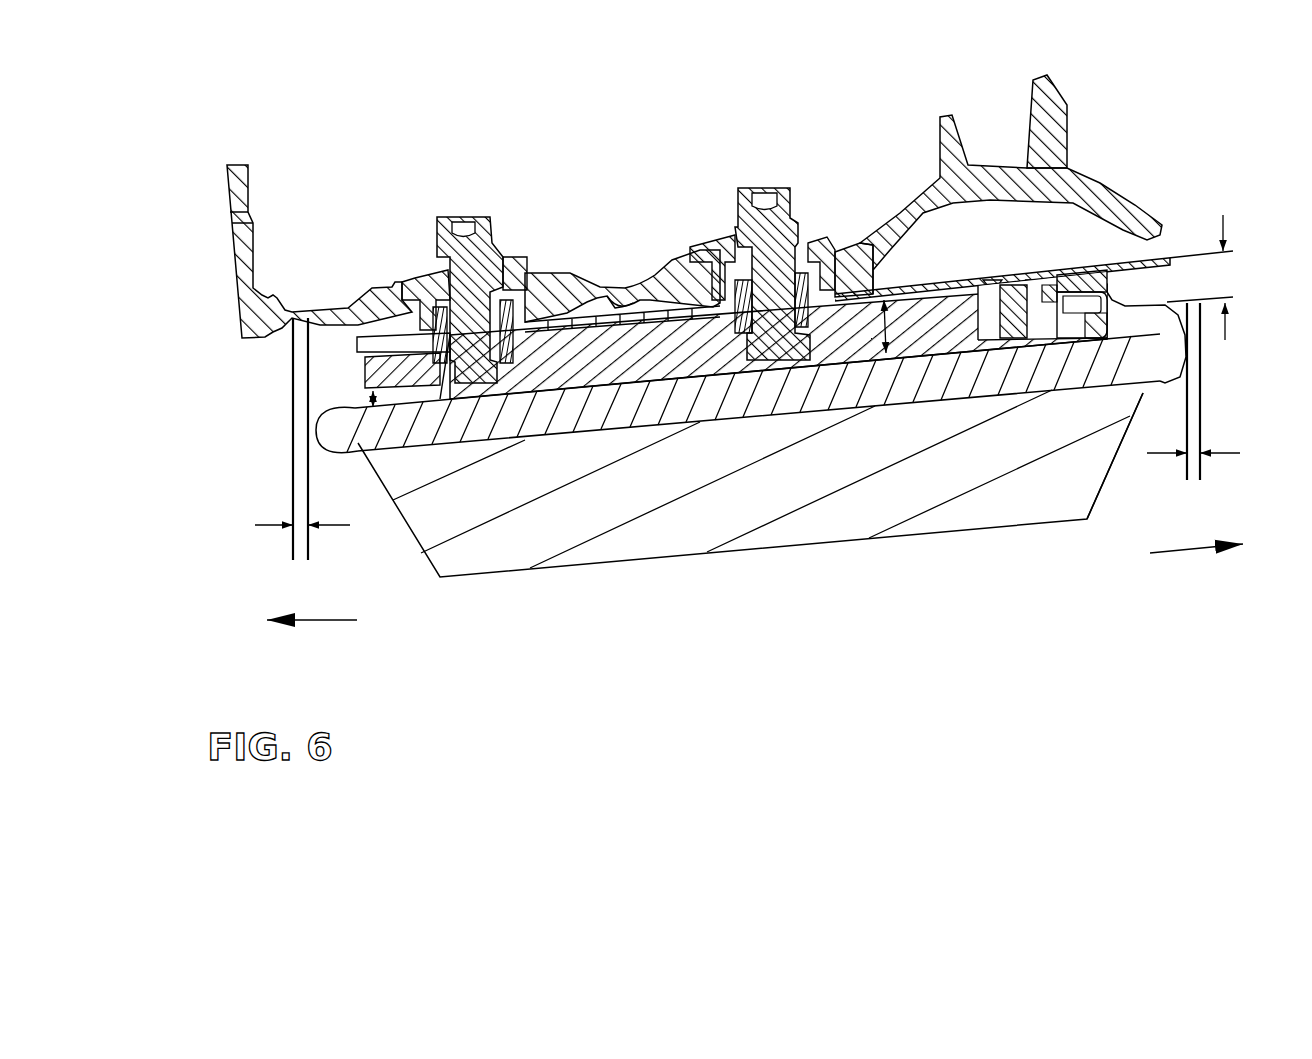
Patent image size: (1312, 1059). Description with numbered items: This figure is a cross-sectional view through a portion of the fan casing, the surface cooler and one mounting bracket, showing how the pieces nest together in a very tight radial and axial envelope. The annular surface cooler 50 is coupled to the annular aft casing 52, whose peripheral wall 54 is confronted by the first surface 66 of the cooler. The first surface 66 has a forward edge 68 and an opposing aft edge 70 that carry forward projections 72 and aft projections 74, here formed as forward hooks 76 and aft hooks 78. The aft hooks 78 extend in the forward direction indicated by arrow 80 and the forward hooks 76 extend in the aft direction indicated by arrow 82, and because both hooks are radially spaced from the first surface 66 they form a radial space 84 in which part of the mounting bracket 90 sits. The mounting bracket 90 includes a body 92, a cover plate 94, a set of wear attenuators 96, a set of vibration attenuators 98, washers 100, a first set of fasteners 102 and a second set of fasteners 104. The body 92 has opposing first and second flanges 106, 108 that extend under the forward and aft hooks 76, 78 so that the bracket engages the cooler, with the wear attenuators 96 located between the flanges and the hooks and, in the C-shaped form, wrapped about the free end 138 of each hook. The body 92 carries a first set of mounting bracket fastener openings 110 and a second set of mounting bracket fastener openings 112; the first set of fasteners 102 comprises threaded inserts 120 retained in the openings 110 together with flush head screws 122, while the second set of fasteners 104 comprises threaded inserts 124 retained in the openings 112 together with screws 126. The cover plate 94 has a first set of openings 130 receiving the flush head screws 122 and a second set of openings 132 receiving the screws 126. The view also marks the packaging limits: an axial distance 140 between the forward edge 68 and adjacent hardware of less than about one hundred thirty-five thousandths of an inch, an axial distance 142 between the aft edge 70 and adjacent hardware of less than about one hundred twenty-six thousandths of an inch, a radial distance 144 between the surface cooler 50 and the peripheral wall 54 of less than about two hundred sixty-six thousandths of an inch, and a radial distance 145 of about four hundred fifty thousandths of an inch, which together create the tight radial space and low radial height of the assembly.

The surface cooler 50 is at (569, 567).
The aft casing 52 is at (604, 278).
The peripheral wall 54 is at (622, 307).
The first surface 66 is at (607, 392).
The forward edge 68 is at (321, 455).
The aft edge 70 is at (1182, 378).
The forward projections 72 is at (364, 363).
The aft projections 74 is at (1100, 294).
The forward hooks 76 is at (403, 368).
The aft hooks 78 is at (1062, 310).
The arrow 80 is at (338, 620).
The arrow 82 is at (1180, 553).
The radial space 84 is at (375, 390).
The mounting bracket 90 is at (920, 277).
The body 92 is at (927, 392).
The cover plate 94 is at (884, 296).
The wear attenuators 96 is at (440, 392).
The vibration attenuators 98 is at (415, 358).
The washers 100 is at (831, 294).
The first set of fasteners 102 is at (992, 268).
The second set of fasteners 104 is at (493, 211).
The first flange 106 is at (400, 390).
The second flange 108 is at (1110, 388).
The first set of mounting bracket fastener openings 110 is at (1007, 390).
The second set of mounting bracket fastener openings 112 is at (770, 392).
The threaded inserts 120 is at (1043, 390).
The flush head screws 122 is at (1013, 310).
The threaded inserts 124 is at (798, 320).
The screws 126 is at (740, 212).
The first set of openings 130 is at (955, 257).
The second set of openings 132 is at (505, 310).
The free end 138 is at (432, 398).
The axial distance 140 is at (1223, 453).
The axial distance 142 is at (267, 525).
The radial distance 144 is at (1223, 232).
The radial distance 145 is at (853, 392).